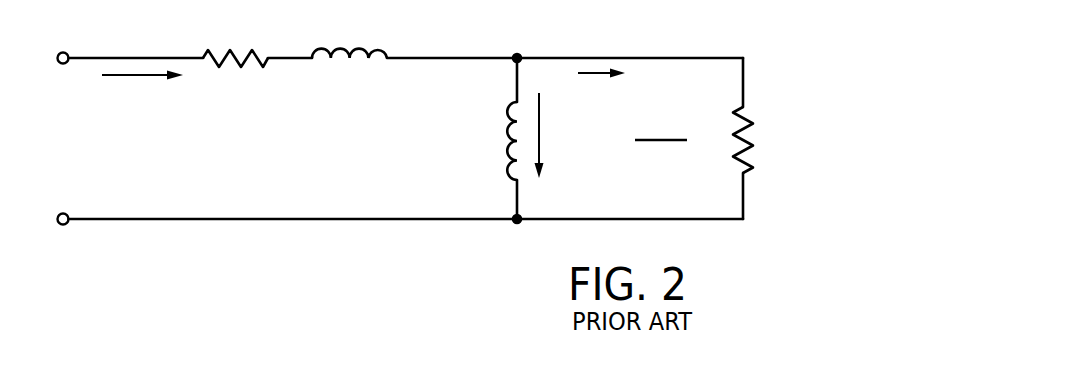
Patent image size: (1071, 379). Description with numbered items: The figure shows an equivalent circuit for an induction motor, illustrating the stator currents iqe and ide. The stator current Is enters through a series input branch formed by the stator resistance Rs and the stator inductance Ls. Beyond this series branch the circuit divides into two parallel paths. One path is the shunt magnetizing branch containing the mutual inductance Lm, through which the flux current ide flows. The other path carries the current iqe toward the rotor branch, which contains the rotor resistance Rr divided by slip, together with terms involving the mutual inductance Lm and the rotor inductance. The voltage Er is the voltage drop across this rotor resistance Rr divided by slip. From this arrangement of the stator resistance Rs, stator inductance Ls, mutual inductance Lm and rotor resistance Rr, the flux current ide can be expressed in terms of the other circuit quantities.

The stator resistance Rs is at (235, 40).
The stator inductance Ls is at (349, 35).
The stator current Is is at (142, 92).
The mutual inductance Lm is at (497, 140).
The flux current ide is at (558, 135).
The stator current iqe is at (601, 93).
The voltage drop across Rr/s Er is at (686, 138).
The rotor resistance Rr is at (815, 140).